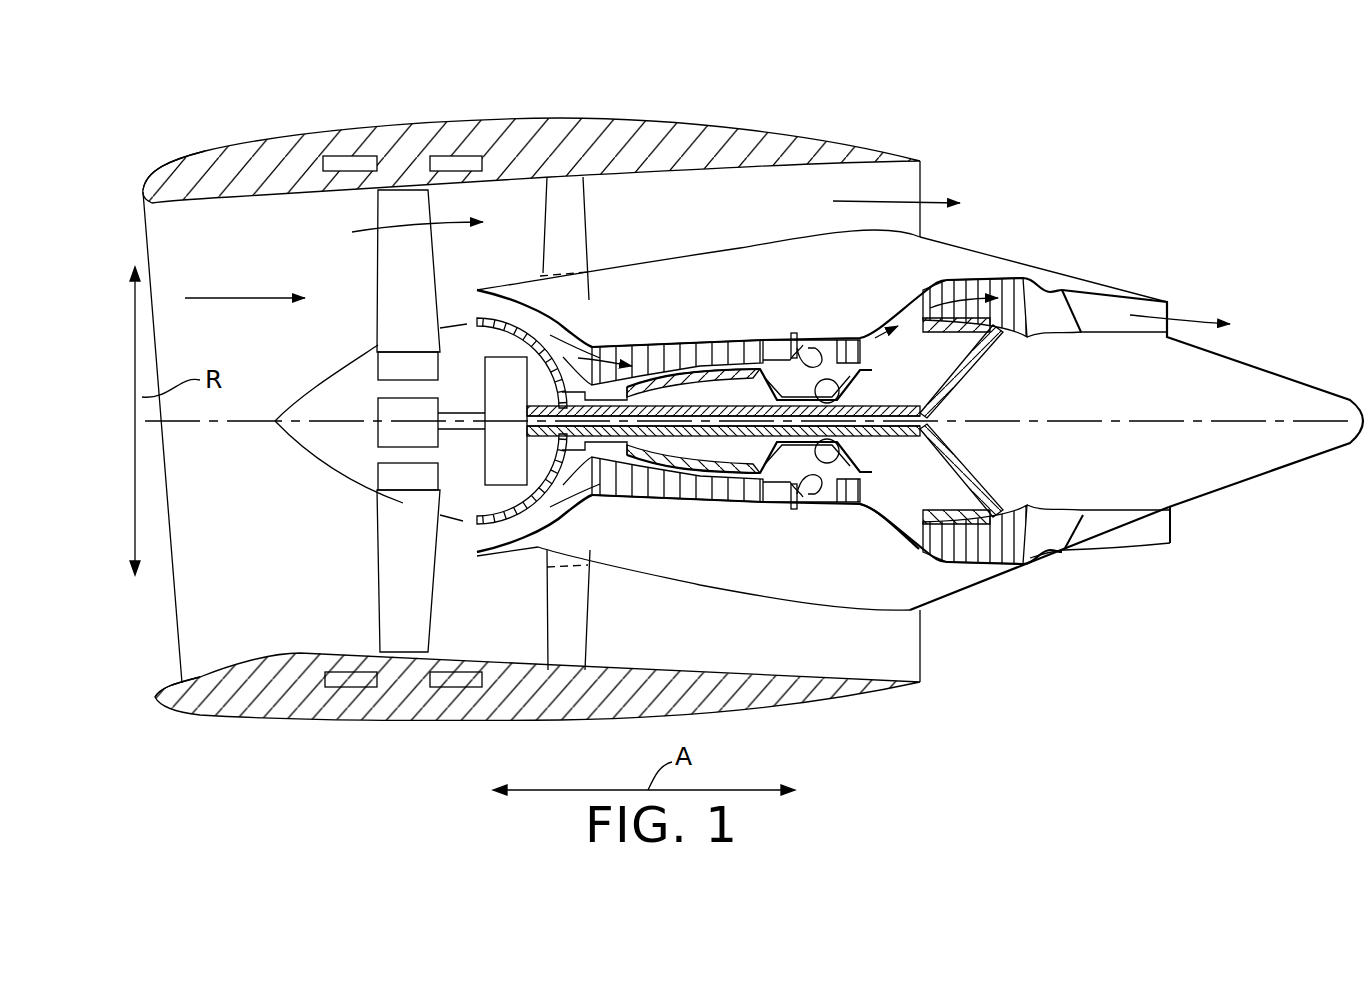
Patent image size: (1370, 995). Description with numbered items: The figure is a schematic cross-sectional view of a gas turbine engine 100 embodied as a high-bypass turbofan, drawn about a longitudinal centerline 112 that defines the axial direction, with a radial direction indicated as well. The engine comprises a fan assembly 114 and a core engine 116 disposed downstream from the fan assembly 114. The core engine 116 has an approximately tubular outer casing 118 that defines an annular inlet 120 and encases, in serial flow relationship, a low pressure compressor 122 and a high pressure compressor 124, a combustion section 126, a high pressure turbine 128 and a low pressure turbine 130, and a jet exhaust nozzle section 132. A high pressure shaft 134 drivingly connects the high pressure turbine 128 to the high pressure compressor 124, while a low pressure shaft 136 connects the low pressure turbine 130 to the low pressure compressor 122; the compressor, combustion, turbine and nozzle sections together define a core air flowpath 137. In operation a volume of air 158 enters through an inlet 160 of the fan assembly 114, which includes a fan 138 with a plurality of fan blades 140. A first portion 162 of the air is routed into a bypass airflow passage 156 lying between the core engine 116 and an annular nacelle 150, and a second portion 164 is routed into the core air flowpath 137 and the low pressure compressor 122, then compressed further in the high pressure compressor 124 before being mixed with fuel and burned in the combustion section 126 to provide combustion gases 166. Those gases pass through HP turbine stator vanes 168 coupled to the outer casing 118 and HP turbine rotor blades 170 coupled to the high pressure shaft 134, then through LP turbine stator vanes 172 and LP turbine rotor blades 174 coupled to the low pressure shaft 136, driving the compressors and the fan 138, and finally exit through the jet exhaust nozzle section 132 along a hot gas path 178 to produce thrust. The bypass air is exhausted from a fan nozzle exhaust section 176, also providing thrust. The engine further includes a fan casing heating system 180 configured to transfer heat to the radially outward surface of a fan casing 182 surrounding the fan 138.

The gas turbine engine 100 is at (1082, 148).
The longitudinal centerline 112 is at (1112, 421).
The fan assembly 114 is at (290, 226).
The core engine 116 is at (698, 500).
The outer casing 118 is at (768, 598).
The annular inlet 120 is at (478, 541).
The low pressure compressor 122 is at (530, 548).
The high pressure compressor 124 is at (623, 497).
The combustion section 126 is at (810, 505).
The high pressure turbine 128 is at (880, 498).
The low pressure turbine 130 is at (1013, 558).
The jet exhaust nozzle section 132 is at (1080, 545).
The high pressure shaft 134 is at (855, 385).
The low pressure shaft 136 is at (912, 405).
The core air flowpath 137 is at (562, 512).
The fan 138 is at (333, 473).
The fan blades 140 is at (378, 588).
The annular nacelle 150 is at (425, 722).
The bypass airflow passage 156 is at (698, 238).
The volume of air 158 is at (243, 298).
The inlet 160 is at (160, 688).
The first portion of air 162 is at (392, 240).
The second portion of air 164 is at (458, 303).
The combustion gases 166 is at (970, 300).
The HP turbine stator vanes 168 is at (838, 500).
The HP turbine rotor blades 170 is at (865, 472).
The LP turbine stator vanes 172 is at (930, 555).
The LP turbine rotor blades 174 is at (940, 562).
The fan nozzle exhaust section 176 is at (905, 185).
The hot gas path 178 is at (1035, 280).
The fan casing heating system 180 is at (405, 163).
The fan casing 182 is at (170, 205).